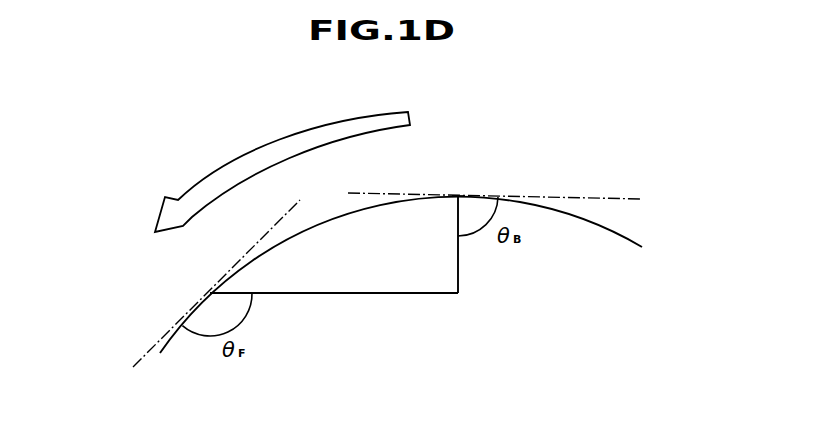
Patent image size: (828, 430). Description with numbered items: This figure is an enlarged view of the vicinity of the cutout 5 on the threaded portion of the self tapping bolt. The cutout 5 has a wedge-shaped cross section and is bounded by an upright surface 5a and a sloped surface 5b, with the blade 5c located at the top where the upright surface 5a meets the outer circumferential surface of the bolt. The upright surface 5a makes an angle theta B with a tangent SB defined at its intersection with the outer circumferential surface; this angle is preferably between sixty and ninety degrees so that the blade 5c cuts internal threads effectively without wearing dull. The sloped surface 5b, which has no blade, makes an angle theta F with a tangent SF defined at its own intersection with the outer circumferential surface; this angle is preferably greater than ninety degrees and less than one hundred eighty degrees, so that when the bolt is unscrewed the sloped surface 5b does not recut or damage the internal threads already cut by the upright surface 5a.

The cutout 5 is at (368, 262).
The upright surface 5a is at (458, 258).
The sloped surface 5b is at (342, 293).
The blade 5c is at (459, 194).
The tangent SF is at (205, 297).
The tangent SB is at (509, 199).